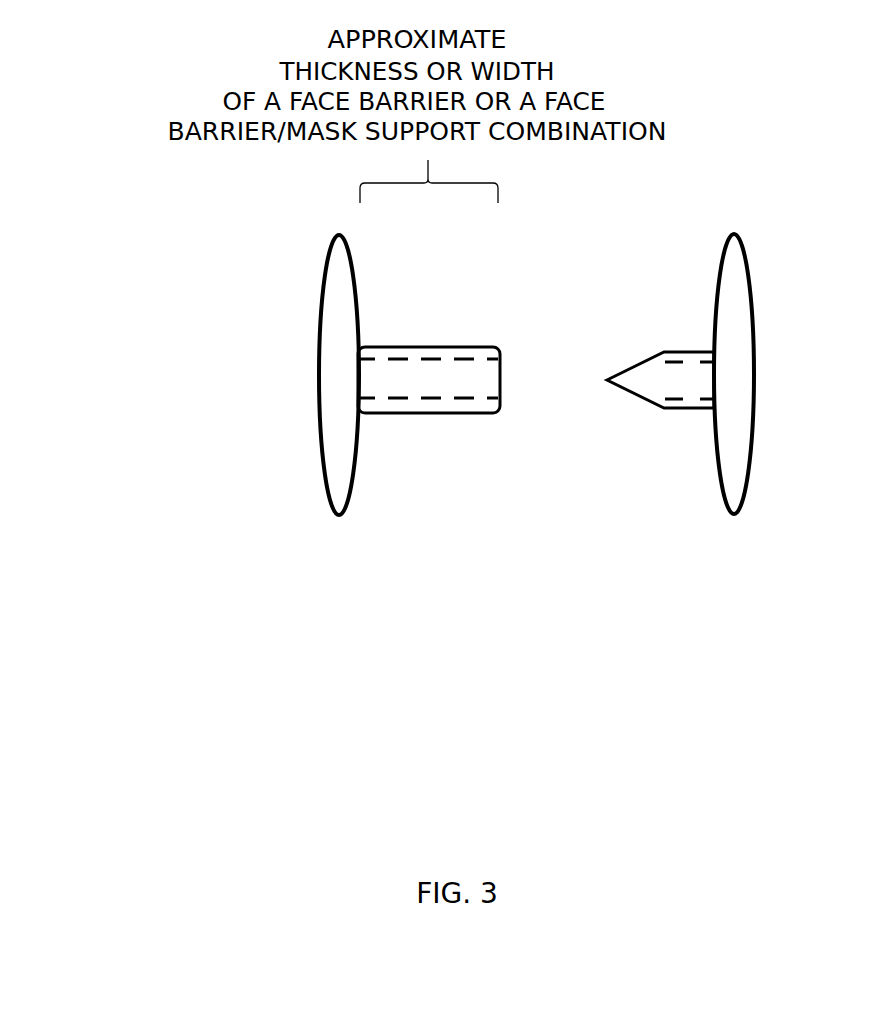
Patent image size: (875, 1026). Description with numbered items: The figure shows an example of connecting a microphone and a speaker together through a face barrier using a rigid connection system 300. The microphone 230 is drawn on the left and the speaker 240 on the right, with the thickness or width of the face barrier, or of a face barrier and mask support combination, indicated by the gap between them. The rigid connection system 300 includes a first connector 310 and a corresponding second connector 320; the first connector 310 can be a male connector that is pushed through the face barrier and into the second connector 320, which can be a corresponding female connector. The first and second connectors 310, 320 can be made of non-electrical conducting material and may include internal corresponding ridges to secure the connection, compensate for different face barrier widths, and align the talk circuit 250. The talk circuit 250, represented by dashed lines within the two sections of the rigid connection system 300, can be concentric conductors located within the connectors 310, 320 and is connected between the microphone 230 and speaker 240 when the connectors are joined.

The microphone 230 is at (320, 322).
The speaker 240 is at (752, 450).
The talk circuit 250 is at (433, 358).
The rigid connection system 300 is at (520, 523).
The first connector 310 is at (672, 352).
The second connector 320 is at (430, 412).